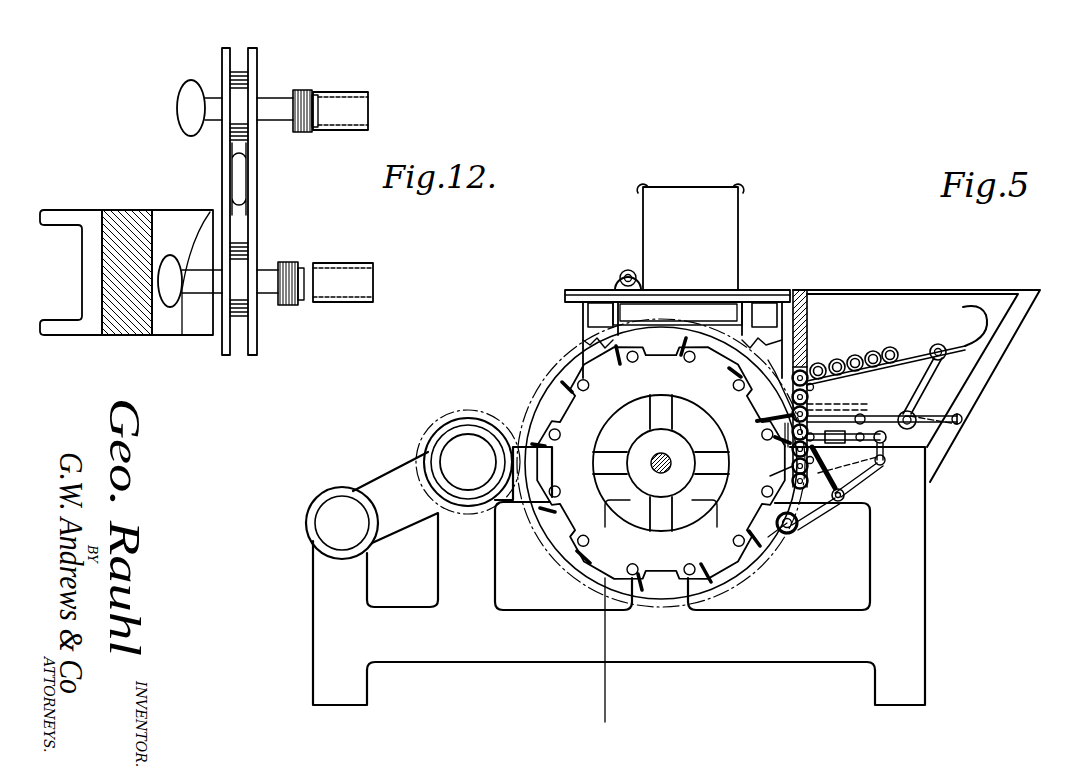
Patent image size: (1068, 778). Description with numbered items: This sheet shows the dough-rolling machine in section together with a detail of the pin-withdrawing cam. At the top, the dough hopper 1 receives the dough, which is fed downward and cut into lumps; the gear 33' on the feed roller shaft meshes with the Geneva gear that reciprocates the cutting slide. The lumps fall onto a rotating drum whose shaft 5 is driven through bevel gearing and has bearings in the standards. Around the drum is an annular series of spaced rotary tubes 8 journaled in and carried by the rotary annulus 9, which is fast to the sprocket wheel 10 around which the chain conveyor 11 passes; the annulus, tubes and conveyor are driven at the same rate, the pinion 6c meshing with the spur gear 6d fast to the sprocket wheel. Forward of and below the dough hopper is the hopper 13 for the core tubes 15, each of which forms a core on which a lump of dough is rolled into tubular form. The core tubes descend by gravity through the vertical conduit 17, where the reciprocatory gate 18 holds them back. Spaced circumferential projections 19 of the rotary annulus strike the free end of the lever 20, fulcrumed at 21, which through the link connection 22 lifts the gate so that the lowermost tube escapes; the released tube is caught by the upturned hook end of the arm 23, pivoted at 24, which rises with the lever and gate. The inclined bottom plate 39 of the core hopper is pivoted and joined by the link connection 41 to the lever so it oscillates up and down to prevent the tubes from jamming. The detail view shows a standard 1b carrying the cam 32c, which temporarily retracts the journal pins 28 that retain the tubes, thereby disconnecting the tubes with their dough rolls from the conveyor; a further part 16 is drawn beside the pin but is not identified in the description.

In FIG. 5, the hopper 1 is at (648, 212).
In FIG. 5, the gear 33' is at (606, 275).
In FIG. 5, the spur gear 6d is at (648, 322).
In FIG. 5, the pinion 6c is at (480, 418).
In FIG. 5, the shaft 5 is at (655, 468).
In FIG. 5, the rotary annulus 9 is at (661, 463).
In FIG. 5, the rotary tubes 8 is at (630, 364).
In FIG. 5, the circumferential projections 19 is at (700, 343).
In FIG. 5, the vertical conduit 17 is at (770, 368).
In FIG. 5, the hopper 13 is at (895, 297).
In FIG. 12, the core tubes 15 is at (340, 105).
In FIG. 5, the core tubes 15 is at (890, 346).
In FIG. 5, the inclined bottom plate 39 is at (937, 344).
In FIG. 5, the link connection 41 is at (927, 388).
In FIG. 5, the lever 20 is at (878, 415).
In FIG. 5, the fulcrum 21 is at (961, 426).
In FIG. 5, the link connection 22 is at (780, 441).
In FIG. 5, the reciprocatory gate 18 is at (792, 468).
In FIG. 5, the pivot 24 is at (881, 465).
In FIG. 5, the arm 23 is at (812, 516).
In FIG. 12, the journal pins 28 is at (276, 96).
In FIG. 12, the knurled nut 16 is at (305, 90).
In FIG. 12, the sprocket wheel 10 is at (289, 306).
In FIG. 12, the chain conveyor 11 is at (240, 193).
In FIG. 12, the standard 1b is at (92, 210).
In FIG. 12, the cam 32c is at (135, 226).